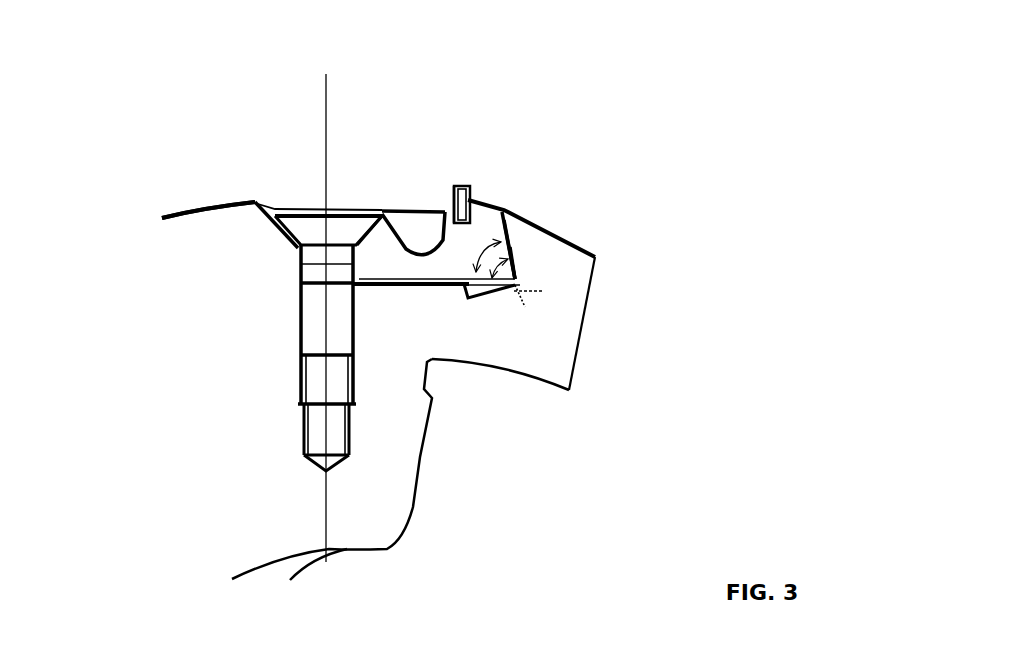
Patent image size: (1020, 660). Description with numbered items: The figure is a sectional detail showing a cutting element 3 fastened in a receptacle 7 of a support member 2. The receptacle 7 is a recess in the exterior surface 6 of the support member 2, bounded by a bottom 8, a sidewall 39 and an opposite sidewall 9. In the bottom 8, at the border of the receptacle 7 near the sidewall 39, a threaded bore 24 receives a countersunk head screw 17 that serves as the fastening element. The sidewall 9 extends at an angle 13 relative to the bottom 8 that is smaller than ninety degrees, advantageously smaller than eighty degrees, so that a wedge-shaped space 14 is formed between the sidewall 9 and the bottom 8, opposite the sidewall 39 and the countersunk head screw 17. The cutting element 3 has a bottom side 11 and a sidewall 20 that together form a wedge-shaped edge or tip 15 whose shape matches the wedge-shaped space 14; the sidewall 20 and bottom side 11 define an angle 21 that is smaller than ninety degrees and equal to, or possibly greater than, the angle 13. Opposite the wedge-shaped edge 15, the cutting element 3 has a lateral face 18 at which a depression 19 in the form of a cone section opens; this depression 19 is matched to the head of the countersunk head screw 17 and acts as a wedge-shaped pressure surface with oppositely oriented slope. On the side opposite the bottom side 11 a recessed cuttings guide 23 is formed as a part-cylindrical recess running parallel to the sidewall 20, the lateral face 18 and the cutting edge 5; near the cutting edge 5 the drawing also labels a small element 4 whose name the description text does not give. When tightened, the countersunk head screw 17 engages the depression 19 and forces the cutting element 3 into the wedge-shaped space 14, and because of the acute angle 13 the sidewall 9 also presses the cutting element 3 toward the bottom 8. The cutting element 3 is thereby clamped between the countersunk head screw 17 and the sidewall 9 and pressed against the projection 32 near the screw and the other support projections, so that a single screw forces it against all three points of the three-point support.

The support member 2 is at (200, 227).
The cutting element 3 is at (499, 264).
The projection 4 is at (461, 205).
The cutting edge 5 is at (453, 187).
The exterior surface 6 is at (235, 200).
The receptacle 7 is at (420, 288).
The bottom 8 is at (440, 285).
The sidewall 9 is at (504, 224).
The bottom side 11 is at (473, 293).
The angle 13 is at (509, 257).
The wedge-shaped space 14 is at (524, 267).
The wedge-shaped edge or tip 15 is at (518, 276).
The countersunk head screw 17 is at (298, 228).
The lateral face 18 is at (347, 250).
The depression 19 is at (362, 208).
The sidewall 20 is at (522, 266).
The angle 21 is at (483, 245).
The recessed cuttings guide 23 is at (423, 253).
The threaded bore 24 is at (286, 298).
The projection 32 is at (358, 283).
The sidewall 39 is at (283, 233).